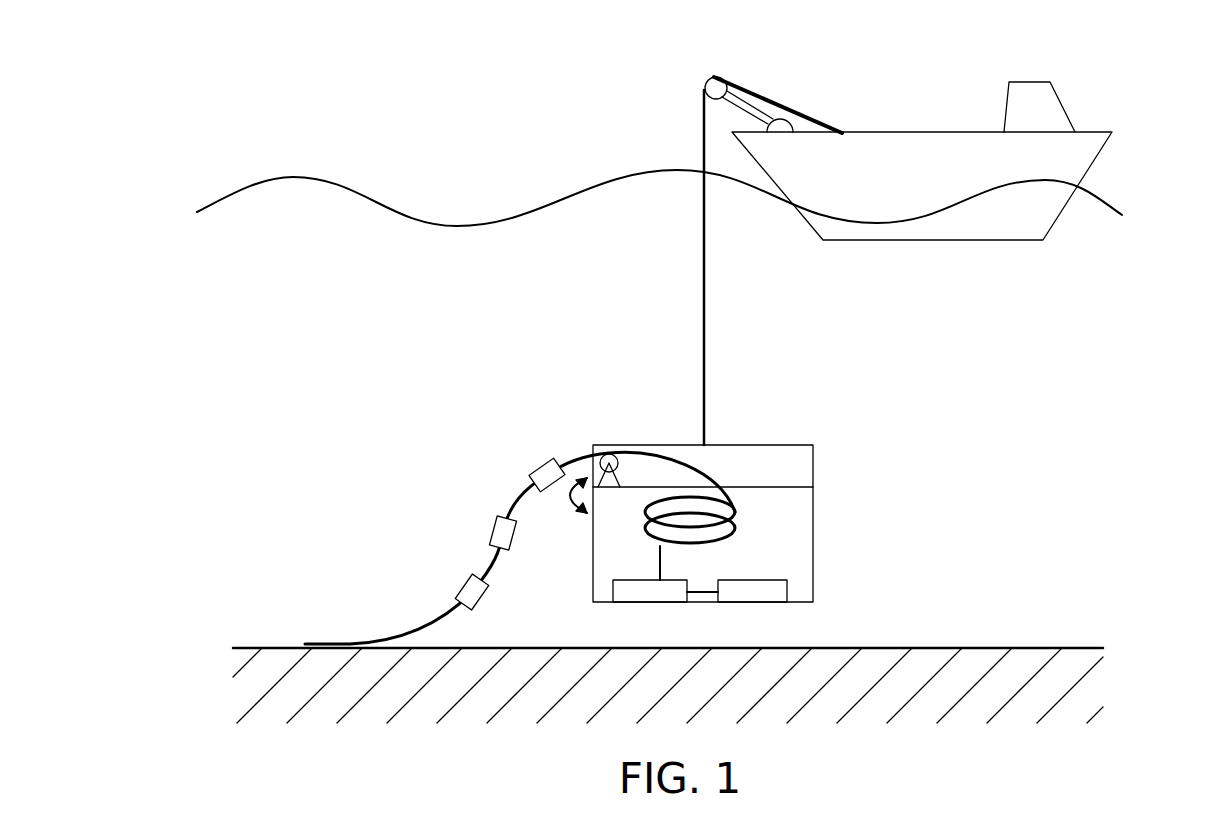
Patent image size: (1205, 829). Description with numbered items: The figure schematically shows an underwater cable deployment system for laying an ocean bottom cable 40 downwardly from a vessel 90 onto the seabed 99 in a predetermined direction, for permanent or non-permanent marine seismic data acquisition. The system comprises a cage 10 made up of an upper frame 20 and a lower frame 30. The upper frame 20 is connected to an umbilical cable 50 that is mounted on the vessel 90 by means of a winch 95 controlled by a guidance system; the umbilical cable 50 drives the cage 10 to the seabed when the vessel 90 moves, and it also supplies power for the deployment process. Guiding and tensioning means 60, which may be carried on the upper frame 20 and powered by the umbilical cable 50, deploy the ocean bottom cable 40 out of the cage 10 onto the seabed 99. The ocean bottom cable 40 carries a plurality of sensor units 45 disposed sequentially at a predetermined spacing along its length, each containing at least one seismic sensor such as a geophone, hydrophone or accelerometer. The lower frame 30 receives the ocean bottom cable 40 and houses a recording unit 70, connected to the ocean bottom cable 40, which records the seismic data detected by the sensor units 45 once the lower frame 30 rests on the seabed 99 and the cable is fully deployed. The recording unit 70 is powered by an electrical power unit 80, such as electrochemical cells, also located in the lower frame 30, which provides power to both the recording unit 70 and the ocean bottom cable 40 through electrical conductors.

The cage 10 is at (744, 470).
The upper frame 20 is at (813, 470).
The lower frame 30 is at (813, 572).
The ocean bottom cable 40 is at (516, 498).
The sensor unit 45 is at (545, 462).
The umbilical cable 50 is at (704, 321).
The guiding and tensioning means 60 is at (619, 459).
The recording unit 70 is at (632, 580).
The electrical power unit 80 is at (762, 580).
The vessel 90 is at (1097, 156).
The winch 95 is at (725, 104).
The seabed 99 is at (253, 648).